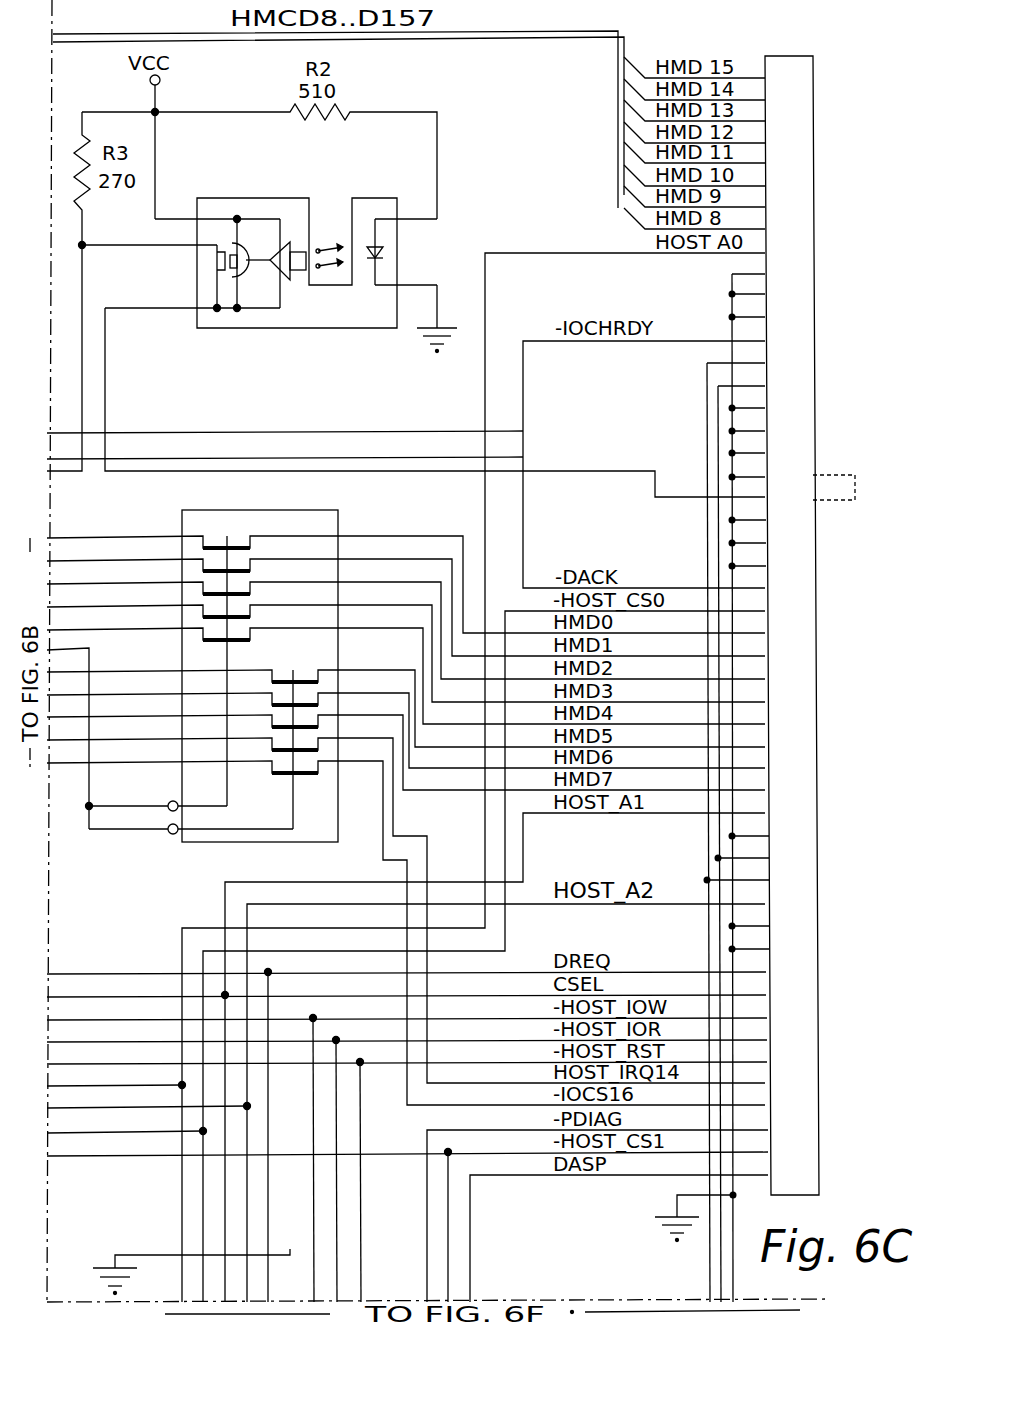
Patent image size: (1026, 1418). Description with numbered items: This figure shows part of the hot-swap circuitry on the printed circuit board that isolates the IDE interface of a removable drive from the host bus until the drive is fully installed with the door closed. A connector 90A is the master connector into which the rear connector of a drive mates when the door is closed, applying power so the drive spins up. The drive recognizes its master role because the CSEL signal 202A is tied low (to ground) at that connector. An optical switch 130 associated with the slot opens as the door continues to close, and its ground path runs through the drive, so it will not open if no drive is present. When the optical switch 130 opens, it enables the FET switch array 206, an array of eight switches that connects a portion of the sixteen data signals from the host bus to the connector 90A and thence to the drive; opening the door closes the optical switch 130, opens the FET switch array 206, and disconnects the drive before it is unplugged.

The optical switch 130 is at (452, 318).
The FET switch array 206 is at (340, 512).
The master connector 90A is at (800, 73).
The CSEL signal 202A is at (114, 1258).